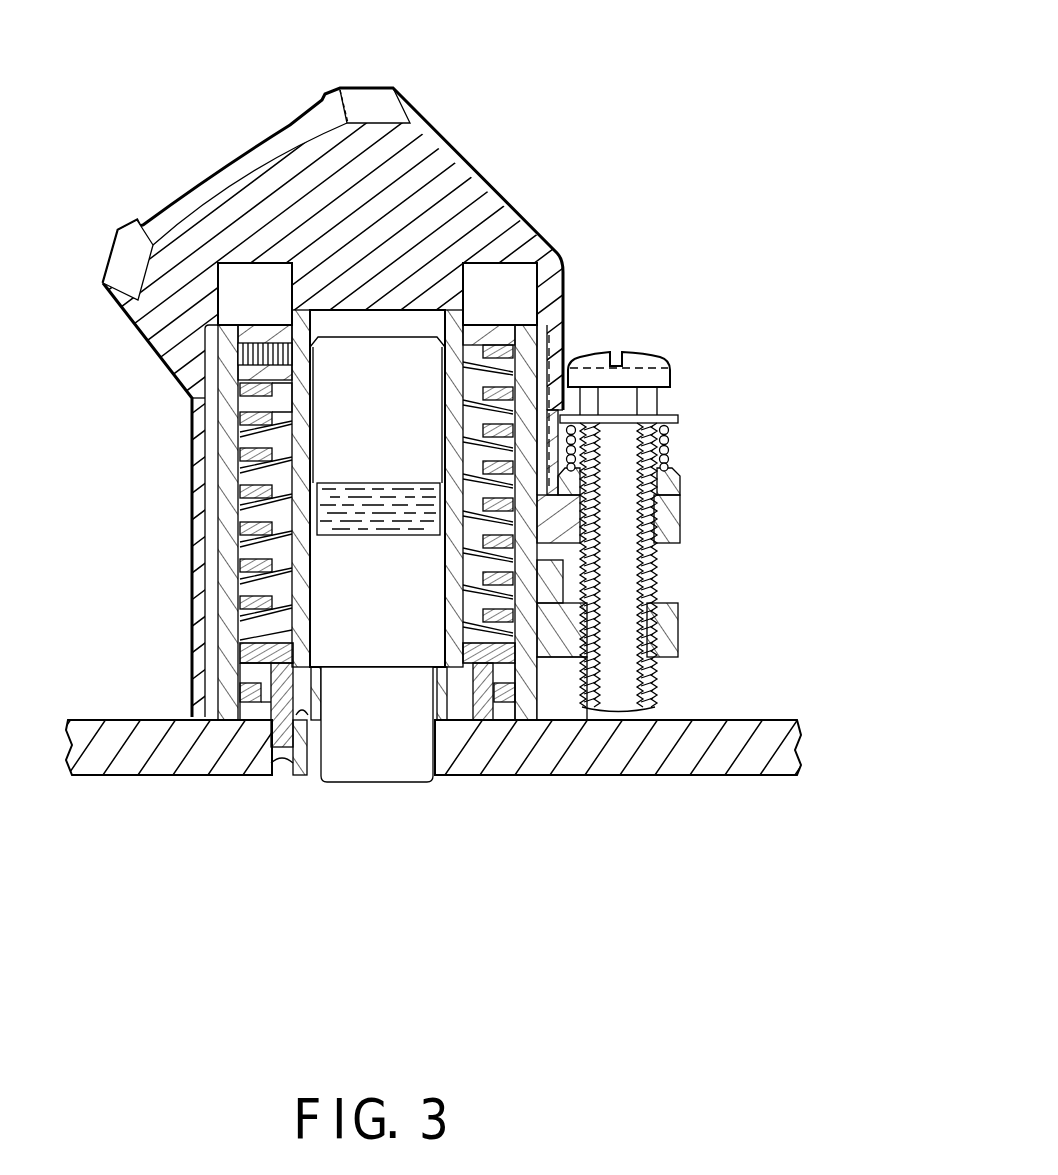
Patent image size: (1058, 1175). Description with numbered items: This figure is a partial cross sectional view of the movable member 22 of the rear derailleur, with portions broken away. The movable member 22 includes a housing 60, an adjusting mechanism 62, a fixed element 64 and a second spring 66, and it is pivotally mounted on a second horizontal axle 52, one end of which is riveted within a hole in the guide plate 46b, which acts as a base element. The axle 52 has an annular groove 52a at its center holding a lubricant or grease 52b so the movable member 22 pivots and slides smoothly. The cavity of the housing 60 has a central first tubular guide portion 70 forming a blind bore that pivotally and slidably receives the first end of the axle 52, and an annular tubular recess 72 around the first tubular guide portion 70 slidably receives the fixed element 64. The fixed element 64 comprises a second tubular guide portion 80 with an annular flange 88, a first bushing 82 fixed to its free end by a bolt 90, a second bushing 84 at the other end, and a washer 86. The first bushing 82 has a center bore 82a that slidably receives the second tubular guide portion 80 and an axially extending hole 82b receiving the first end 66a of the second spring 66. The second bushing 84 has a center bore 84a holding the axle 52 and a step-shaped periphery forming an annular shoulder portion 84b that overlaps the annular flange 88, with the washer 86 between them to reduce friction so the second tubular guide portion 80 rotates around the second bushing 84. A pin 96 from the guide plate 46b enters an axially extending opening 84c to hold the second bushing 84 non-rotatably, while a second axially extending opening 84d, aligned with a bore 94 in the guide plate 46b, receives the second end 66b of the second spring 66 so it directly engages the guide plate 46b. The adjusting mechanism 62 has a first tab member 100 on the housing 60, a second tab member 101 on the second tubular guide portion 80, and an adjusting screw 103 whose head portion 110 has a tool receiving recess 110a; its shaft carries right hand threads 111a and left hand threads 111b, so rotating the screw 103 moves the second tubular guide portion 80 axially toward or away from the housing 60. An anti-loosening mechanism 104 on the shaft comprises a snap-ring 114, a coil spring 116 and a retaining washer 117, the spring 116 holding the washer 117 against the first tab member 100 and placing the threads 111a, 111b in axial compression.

The movable member 22 is at (585, 95).
The guide plate 46b is at (767, 720).
The second horizontal axle 52 is at (410, 330).
The annular groove 52a is at (360, 530).
The lubricant or grease 52b is at (214, 437).
The housing 60 is at (525, 215).
The adjustment mechanism 62 is at (712, 438).
The fixed element 64 is at (207, 545).
The second spring 66 is at (225, 478).
The first end of second spring 66a is at (445, 368).
The second end of second spring 66b is at (288, 760).
The first tubular guide portion 70 is at (347, 330).
The annular tubular recess 72 is at (232, 262).
The second tubular guide portion 80 is at (232, 612).
The first bushing 82 is at (484, 314).
The center bore 82a is at (292, 388).
The axially extending hole 82b is at (520, 328).
The second bushing 84 is at (415, 708).
The center bore 84a is at (323, 688).
The annular shoulder portion 84b is at (235, 700).
The axially extending opening 84c is at (365, 700).
The second axially extending opening 84d is at (427, 703).
The washer 86 is at (247, 712).
The annular flange 88 is at (522, 720).
The bolt 90 is at (194, 385).
The bore 94 is at (280, 760).
The pin 96 is at (465, 706).
The first tab member 100 is at (680, 518).
The second tab member 101 is at (680, 632).
The adjusting screw 103 is at (618, 355).
The anti-loosening mechanism 104 is at (683, 462).
The head portion 110 is at (687, 511).
The tool receiving recess 110a is at (664, 350).
The first set of right hand threads 111a is at (655, 556).
The second set of left hand threads 111b is at (650, 680).
The snap-ring 114 is at (676, 416).
The coil spring 116 is at (680, 442).
The retaining washer 117 is at (680, 490).